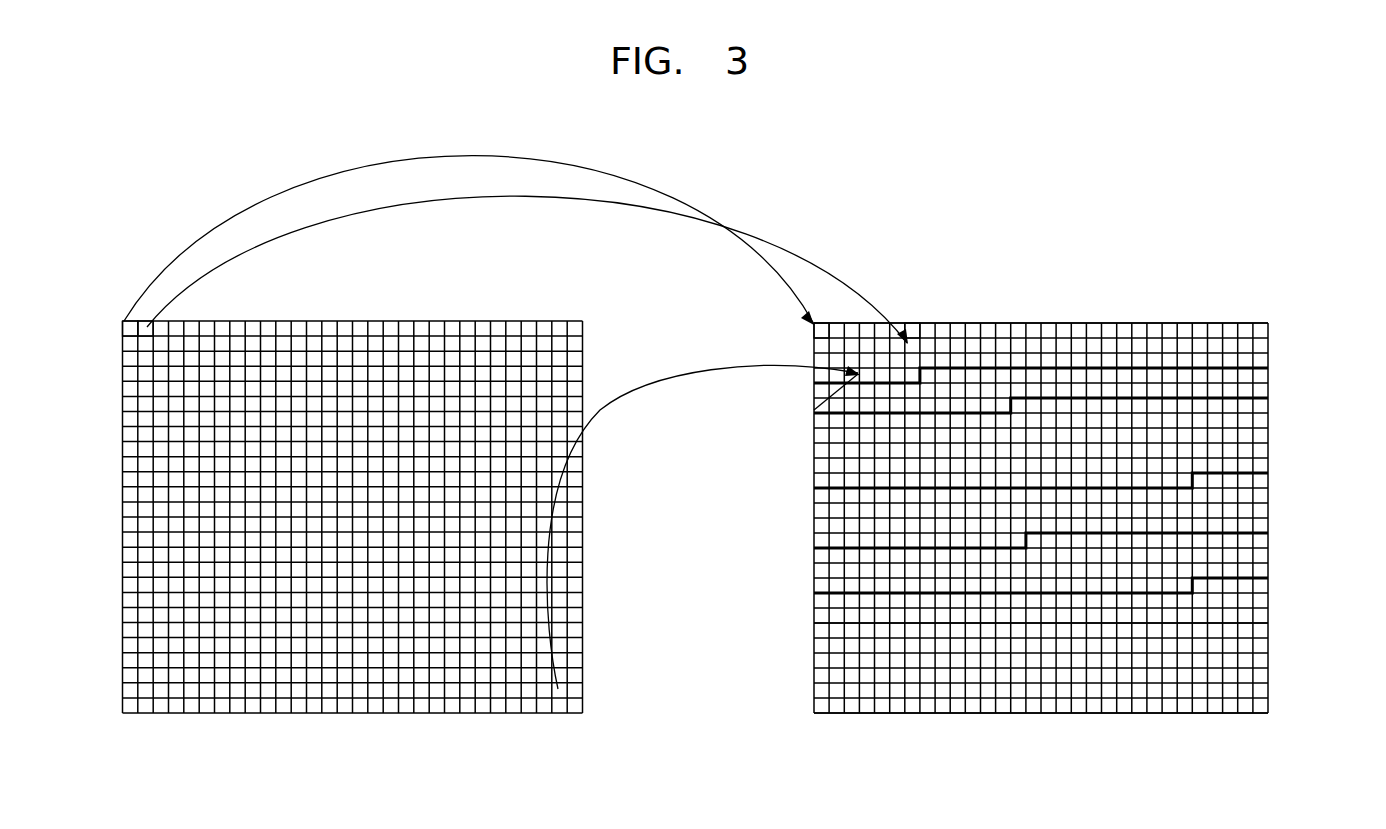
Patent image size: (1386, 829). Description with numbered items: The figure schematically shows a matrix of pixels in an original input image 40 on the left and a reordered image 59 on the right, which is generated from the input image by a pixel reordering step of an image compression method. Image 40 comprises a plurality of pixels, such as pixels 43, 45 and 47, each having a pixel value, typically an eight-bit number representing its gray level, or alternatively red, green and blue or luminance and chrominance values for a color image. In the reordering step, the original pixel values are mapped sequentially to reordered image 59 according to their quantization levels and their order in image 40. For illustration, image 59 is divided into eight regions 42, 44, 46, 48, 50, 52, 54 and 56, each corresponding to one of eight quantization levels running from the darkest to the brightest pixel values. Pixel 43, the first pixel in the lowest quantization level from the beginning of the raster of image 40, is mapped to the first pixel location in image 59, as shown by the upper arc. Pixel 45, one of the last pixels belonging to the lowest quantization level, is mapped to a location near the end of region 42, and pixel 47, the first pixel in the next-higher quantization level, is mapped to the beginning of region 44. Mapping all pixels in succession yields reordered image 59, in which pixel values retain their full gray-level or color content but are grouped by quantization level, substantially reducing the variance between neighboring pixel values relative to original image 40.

The original input image 40 is at (597, 307).
The first region 42 is at (814, 342).
The first pixel 43 is at (147, 330).
The second region 44 is at (814, 398).
The pixel near end of lowest level 45 is at (560, 688).
The third region 46 is at (814, 428).
The first pixel of next-higher level 47 is at (128, 330).
The fourth region 48 is at (814, 470).
The fifth region 50 is at (814, 524).
The sixth region 52 is at (814, 568).
The seventh region 54 is at (814, 622).
The eighth region 56 is at (814, 686).
The reordered image 59 is at (1309, 291).